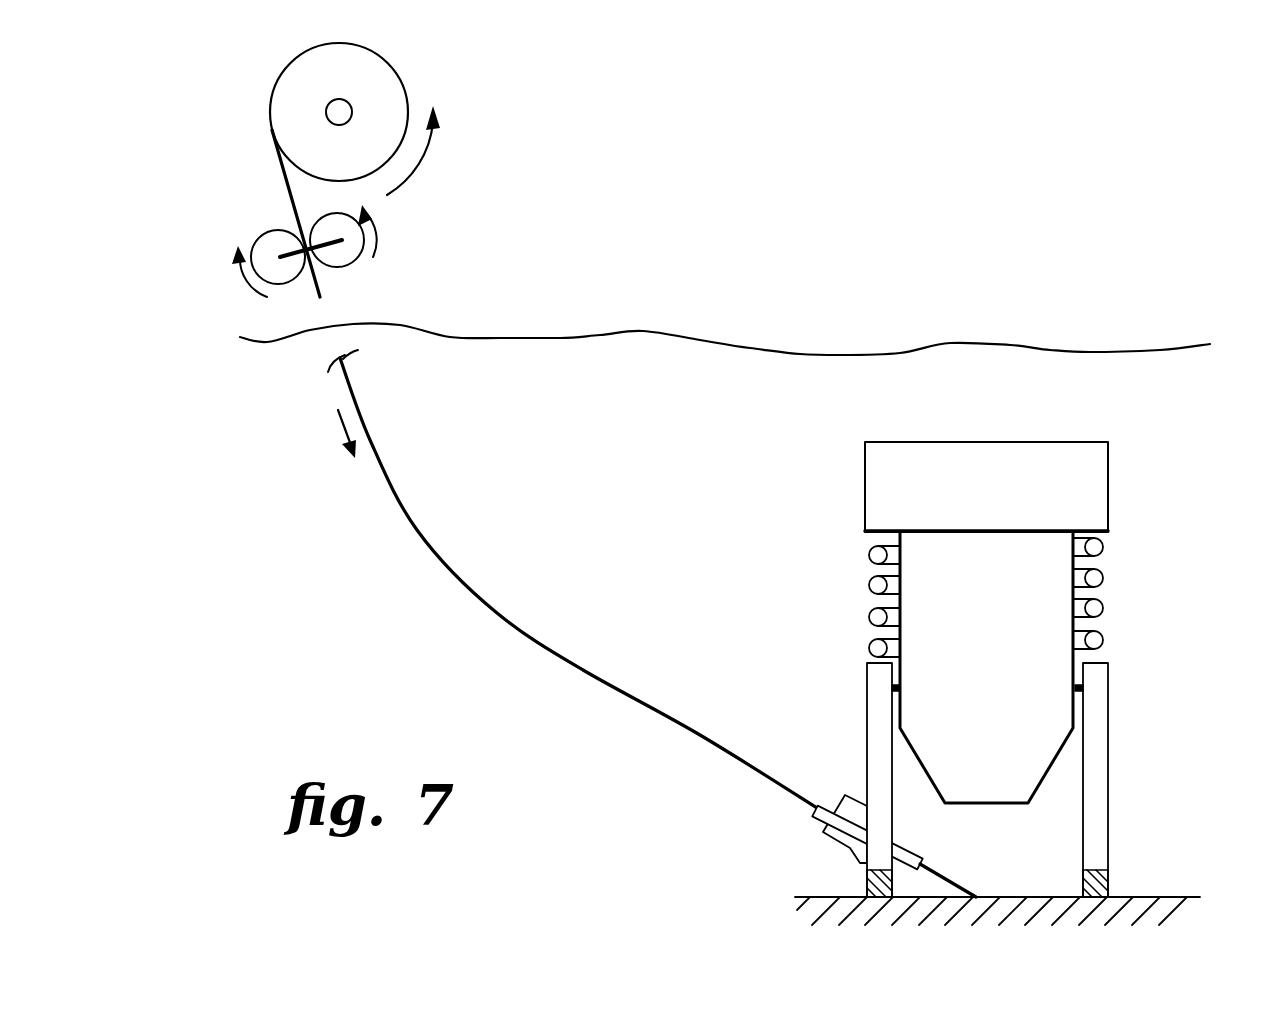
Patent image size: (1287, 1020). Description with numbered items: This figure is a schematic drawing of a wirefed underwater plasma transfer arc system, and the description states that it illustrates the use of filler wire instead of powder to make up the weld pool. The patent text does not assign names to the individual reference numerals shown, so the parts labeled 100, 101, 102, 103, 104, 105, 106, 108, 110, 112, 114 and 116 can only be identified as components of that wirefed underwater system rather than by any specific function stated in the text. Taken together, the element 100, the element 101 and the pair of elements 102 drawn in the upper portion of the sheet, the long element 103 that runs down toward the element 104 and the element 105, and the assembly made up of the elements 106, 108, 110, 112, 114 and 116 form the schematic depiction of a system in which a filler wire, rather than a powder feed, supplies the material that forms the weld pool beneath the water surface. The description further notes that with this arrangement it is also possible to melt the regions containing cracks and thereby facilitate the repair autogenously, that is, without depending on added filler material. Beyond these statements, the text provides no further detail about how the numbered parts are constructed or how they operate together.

The reel 100 is at (407, 87).
The cable 101 is at (280, 172).
The drive rollers 102 is at (268, 297).
The cable 103 is at (427, 537).
The connector flange 104 is at (825, 798).
The connector 105 is at (838, 840).
The base housing 106 is at (1140, 524).
The springs 108 is at (1103, 607).
The top plate 110 is at (1033, 442).
The guide tube 112 is at (1108, 808).
The stop 114 is at (1085, 692).
The anchor 116 is at (867, 887).